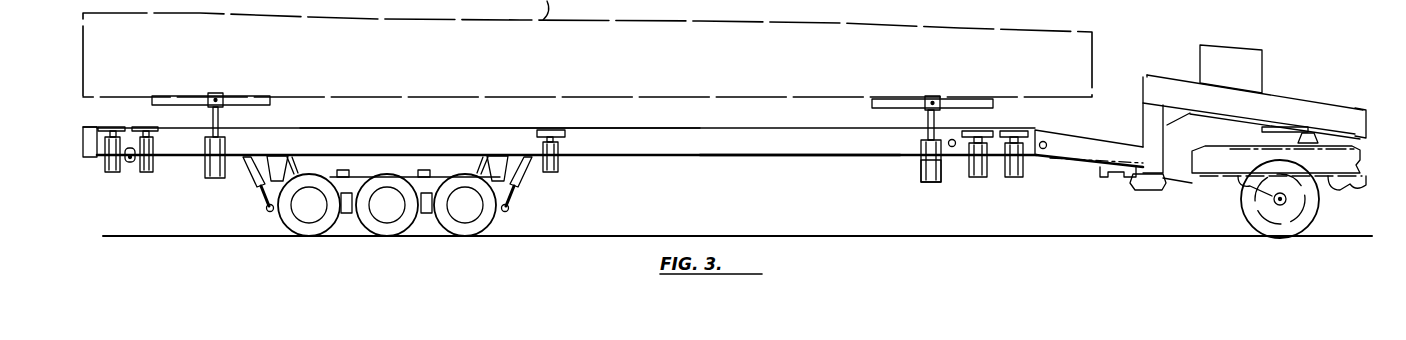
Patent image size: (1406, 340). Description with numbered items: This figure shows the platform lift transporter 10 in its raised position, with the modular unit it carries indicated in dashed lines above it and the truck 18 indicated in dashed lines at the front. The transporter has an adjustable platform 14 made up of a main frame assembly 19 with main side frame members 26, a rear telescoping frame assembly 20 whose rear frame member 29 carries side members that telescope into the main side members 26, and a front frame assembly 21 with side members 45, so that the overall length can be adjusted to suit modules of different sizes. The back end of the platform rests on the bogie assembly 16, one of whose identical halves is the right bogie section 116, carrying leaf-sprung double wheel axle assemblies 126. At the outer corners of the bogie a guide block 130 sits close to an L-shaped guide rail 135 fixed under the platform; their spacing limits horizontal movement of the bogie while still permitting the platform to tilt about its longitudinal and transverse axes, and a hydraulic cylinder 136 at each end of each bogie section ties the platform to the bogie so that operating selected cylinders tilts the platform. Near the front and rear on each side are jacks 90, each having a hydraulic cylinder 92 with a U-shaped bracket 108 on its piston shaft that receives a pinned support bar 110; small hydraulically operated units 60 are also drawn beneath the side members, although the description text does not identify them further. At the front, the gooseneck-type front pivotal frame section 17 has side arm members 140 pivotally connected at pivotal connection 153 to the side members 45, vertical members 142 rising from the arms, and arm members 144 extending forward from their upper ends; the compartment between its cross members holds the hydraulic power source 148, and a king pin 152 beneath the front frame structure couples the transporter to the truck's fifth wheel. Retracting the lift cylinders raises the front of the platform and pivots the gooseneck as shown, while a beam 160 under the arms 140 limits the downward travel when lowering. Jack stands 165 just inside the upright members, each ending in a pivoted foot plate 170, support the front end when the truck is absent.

The platform lift transporter 10 is at (1279, 50).
The platform 14 is at (662, 160).
The bogie assembly 16 is at (350, 216).
The front pivotal frame section 17 is at (1162, 74).
The truck 18 is at (1345, 185).
The main frame assembly 19 is at (754, 127).
The rear telescoping frame assembly 20 is at (82, 160).
The front frame assembly 21 is at (1062, 127).
The main side frame members 26 is at (792, 148).
The rear frame member 29 is at (91, 120).
The side members 45 is at (1116, 114).
The hydraulic cylinder 60 is at (147, 175).
The jacks 90 is at (204, 171).
The hydraulic cylinder 92 is at (933, 183).
The U-shaped bracket 108 is at (935, 99).
The support bar 110 is at (243, 99).
The right bogie section 116 is at (412, 177).
The double wheel axle assemblies 126 is at (295, 229).
The guide block 130 is at (285, 172).
The guide rail 135 is at (278, 162).
The hydraulic cylinder 136 is at (250, 178).
The side arm members 140 is at (1075, 150).
The vertical members 142 is at (1143, 107).
The arm members 144 is at (1270, 106).
The hydraulic power source 148 is at (1225, 52).
The king pin 152 is at (1310, 134).
The pivotal connection 153 is at (1045, 158).
The beam 160 is at (1110, 180).
The jack stands 165 is at (1170, 179).
The foot plate 170 is at (1158, 190).